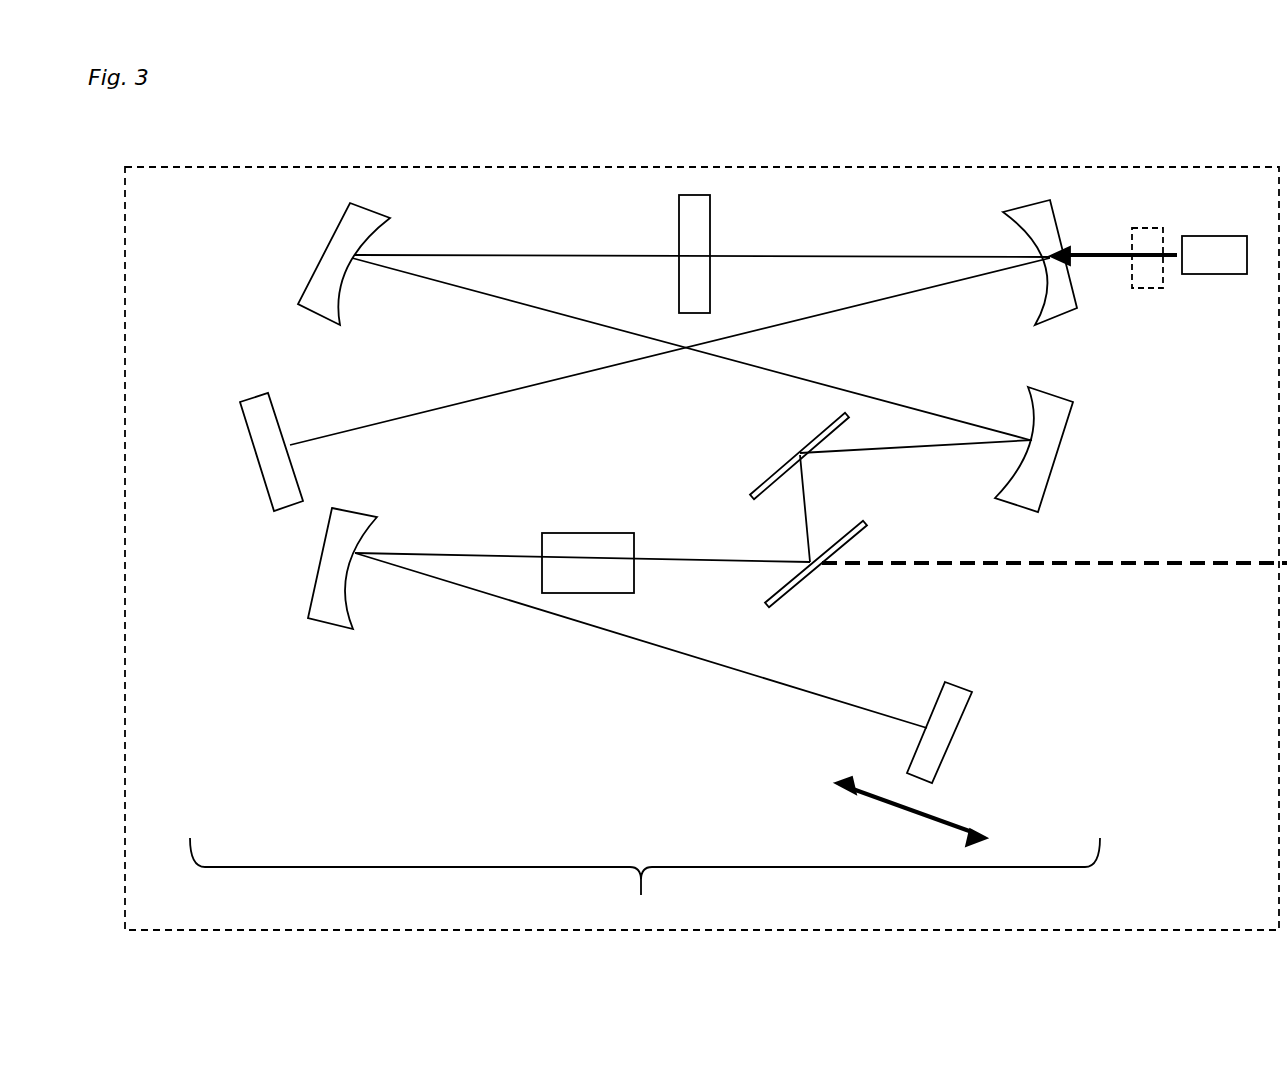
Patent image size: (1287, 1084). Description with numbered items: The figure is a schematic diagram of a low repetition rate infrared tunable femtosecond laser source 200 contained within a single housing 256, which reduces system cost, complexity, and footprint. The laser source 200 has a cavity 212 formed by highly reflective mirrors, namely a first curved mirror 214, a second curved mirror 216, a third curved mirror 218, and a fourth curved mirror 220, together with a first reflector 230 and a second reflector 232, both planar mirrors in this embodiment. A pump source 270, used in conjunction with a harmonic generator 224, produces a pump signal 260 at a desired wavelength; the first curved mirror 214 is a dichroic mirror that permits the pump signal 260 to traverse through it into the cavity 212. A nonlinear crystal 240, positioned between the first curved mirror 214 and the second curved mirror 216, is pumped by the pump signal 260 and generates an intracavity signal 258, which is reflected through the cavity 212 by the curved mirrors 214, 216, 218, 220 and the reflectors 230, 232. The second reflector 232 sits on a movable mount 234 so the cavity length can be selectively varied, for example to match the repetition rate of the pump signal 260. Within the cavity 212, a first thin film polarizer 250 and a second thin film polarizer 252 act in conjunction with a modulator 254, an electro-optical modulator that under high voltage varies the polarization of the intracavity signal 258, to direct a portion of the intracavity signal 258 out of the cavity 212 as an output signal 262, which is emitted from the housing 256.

The laser source 200 is at (1135, 194).
The cavity 212 is at (645, 882).
The first curved mirror 214 is at (1030, 215).
The second curved mirror 216 is at (313, 287).
The third curved mirror 218 is at (1068, 433).
The fourth curved mirror 220 is at (305, 592).
The harmonic generator 224 is at (1153, 288).
The first reflector 230 is at (258, 457).
The second reflector 232 is at (963, 698).
The movable mount 234 is at (930, 813).
The nonlinear crystal 240 is at (693, 205).
The first thin film polarizer 250 is at (803, 583).
The second thin film polarizer 252 is at (797, 450).
The modulator 254 is at (567, 537).
The housing 256 is at (486, 166).
The intracavity signal 258 is at (598, 628).
The pump signal 260 is at (1127, 257).
The output signal 262 is at (1150, 561).
The pump source 270 is at (1197, 236).